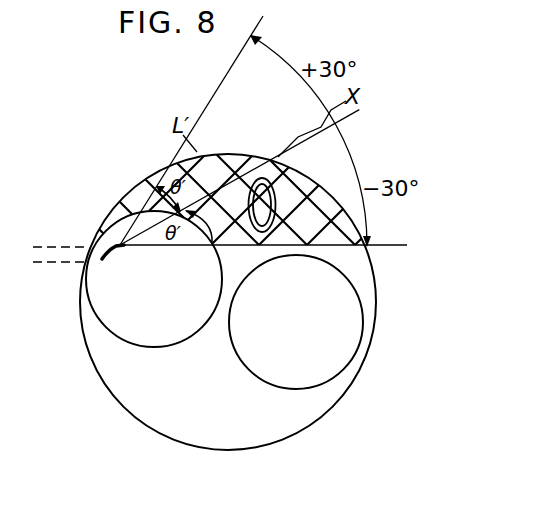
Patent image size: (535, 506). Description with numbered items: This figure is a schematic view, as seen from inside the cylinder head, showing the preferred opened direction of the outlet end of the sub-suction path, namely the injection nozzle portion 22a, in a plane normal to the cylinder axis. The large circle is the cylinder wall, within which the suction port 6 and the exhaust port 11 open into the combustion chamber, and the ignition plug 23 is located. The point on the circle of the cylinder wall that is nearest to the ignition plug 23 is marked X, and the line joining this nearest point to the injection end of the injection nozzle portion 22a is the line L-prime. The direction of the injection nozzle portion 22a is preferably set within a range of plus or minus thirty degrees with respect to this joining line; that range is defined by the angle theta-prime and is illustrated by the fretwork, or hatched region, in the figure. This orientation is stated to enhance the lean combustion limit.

The suction port 6 is at (115, 323).
The exhaust port 11 is at (350, 345).
The injection nozzle portion 22a is at (103, 261).
The ignition plug 23 is at (318, 248).